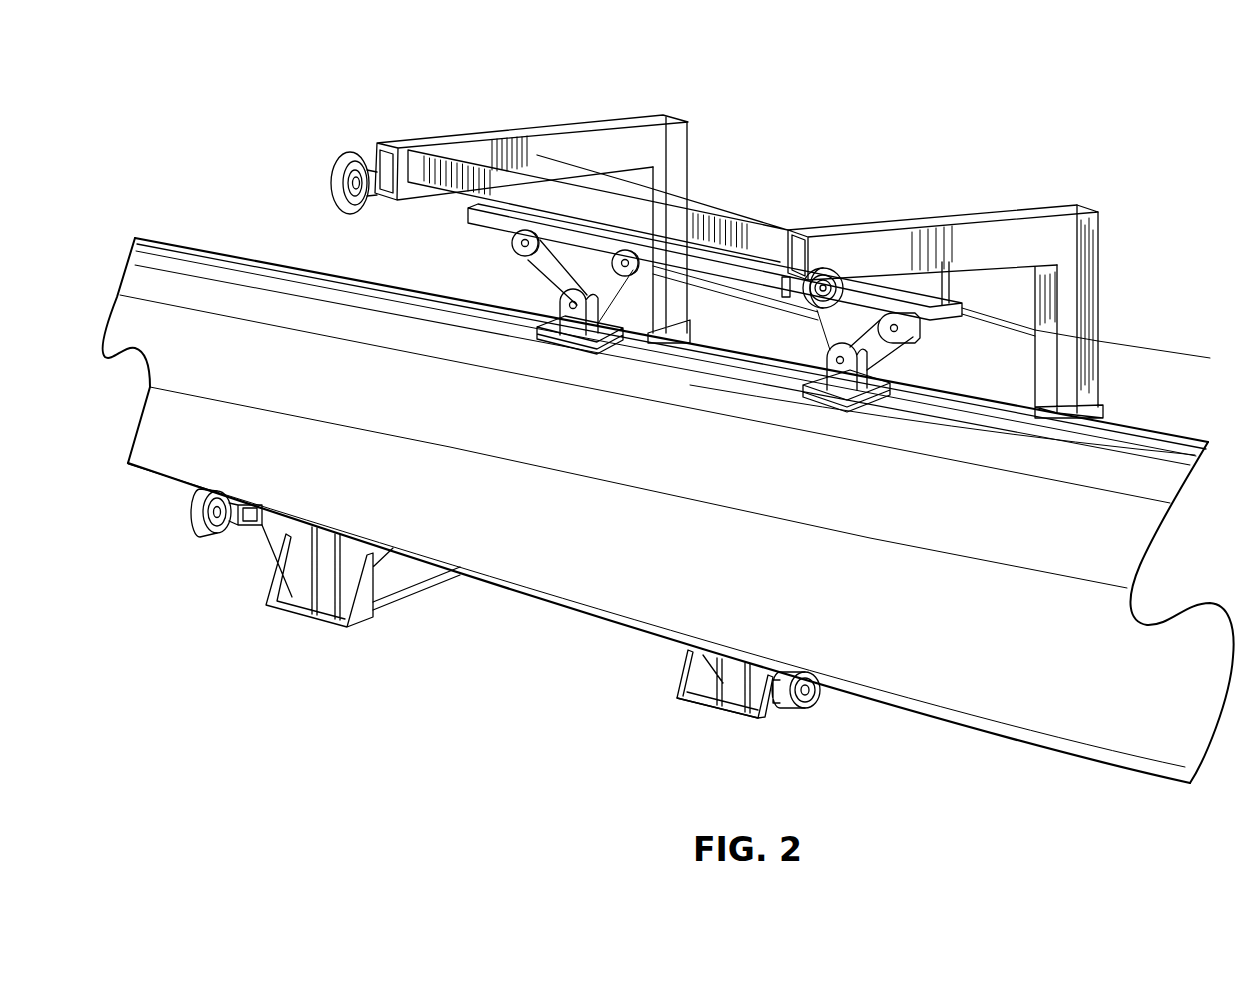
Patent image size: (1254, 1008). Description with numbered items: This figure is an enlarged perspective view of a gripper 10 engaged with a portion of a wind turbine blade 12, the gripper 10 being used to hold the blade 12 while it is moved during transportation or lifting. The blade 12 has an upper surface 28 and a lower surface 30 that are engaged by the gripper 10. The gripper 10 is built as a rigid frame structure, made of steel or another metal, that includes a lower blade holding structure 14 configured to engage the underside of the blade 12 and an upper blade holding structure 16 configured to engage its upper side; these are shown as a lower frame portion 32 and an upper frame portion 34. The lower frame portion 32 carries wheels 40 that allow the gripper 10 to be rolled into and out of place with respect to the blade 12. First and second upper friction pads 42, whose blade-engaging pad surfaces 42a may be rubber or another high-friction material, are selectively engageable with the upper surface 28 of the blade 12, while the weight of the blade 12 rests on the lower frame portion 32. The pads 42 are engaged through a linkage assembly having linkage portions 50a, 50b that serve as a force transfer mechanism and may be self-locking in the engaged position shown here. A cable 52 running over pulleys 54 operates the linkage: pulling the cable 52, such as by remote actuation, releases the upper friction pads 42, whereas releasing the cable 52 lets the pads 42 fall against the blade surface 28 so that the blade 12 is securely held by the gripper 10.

The gripper 10 is at (965, 120).
The wind turbine blade 12 is at (204, 244).
The lower blade holding structure 14 is at (758, 718).
The upper blade holding structure 16 is at (1106, 244).
The upper surface 28 is at (268, 286).
The lower surface 30 is at (582, 618).
The lower frame portion 32 is at (320, 592).
The upper frame portion 34 is at (653, 117).
The wheels 40 is at (202, 533).
The upper friction pads 42 is at (573, 349).
The pad surface 42a is at (567, 362).
The linkage assembly portion 50a is at (885, 358).
The linkage assembly portion 50b is at (532, 262).
The cable 52 is at (1162, 336).
The pulleys 54 is at (638, 258).